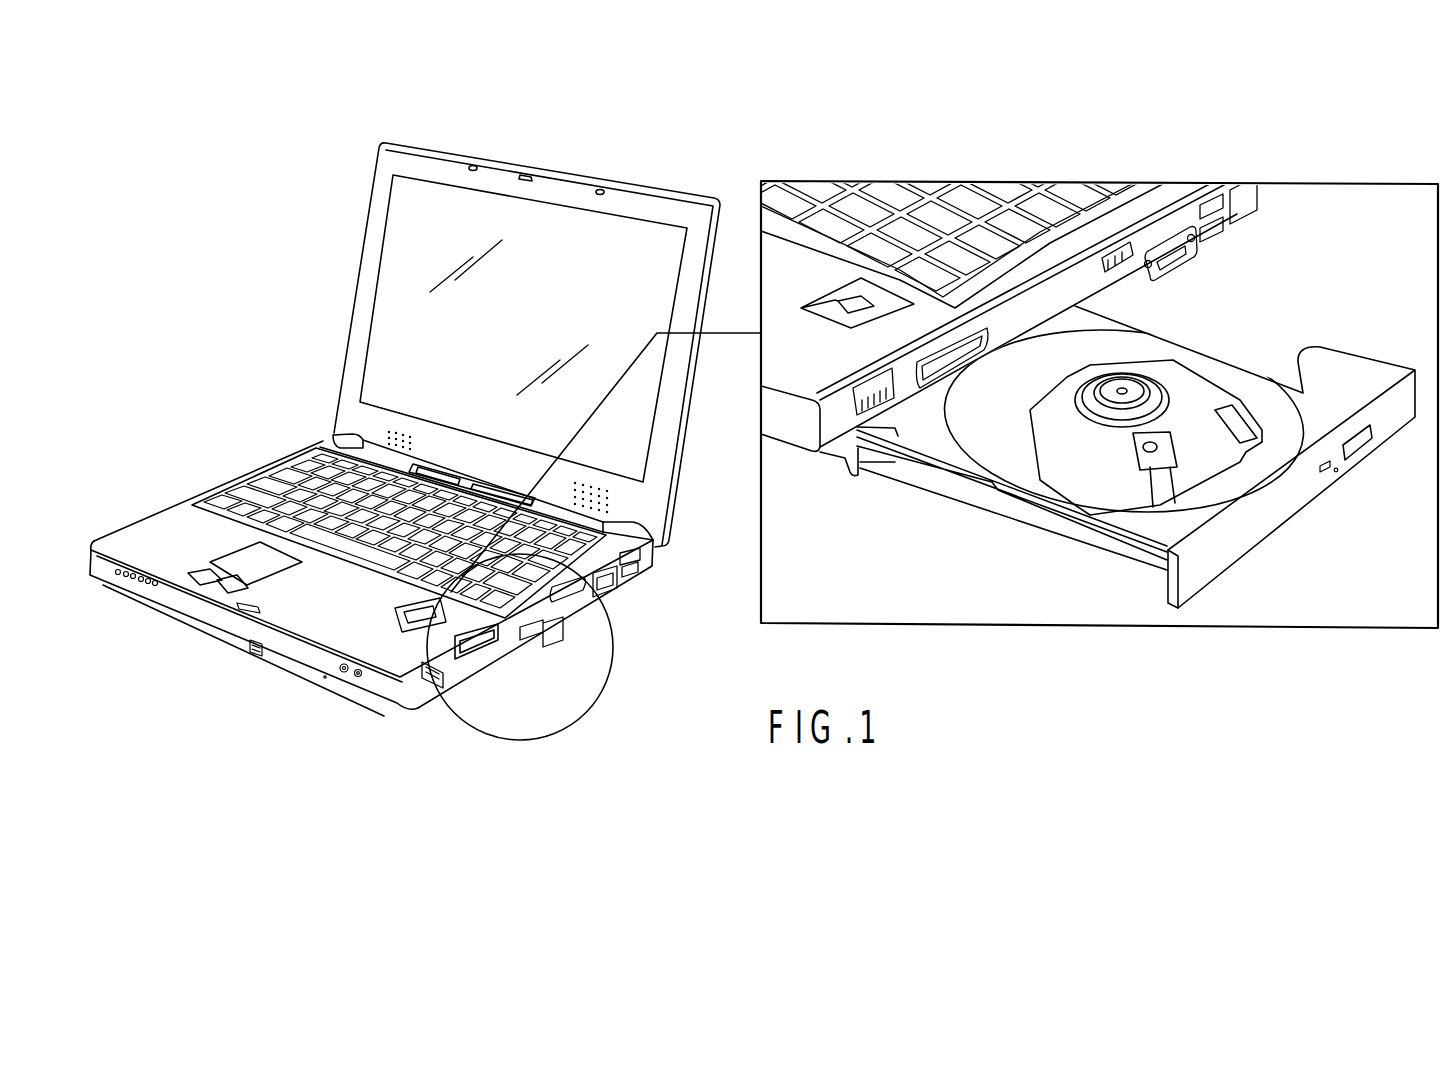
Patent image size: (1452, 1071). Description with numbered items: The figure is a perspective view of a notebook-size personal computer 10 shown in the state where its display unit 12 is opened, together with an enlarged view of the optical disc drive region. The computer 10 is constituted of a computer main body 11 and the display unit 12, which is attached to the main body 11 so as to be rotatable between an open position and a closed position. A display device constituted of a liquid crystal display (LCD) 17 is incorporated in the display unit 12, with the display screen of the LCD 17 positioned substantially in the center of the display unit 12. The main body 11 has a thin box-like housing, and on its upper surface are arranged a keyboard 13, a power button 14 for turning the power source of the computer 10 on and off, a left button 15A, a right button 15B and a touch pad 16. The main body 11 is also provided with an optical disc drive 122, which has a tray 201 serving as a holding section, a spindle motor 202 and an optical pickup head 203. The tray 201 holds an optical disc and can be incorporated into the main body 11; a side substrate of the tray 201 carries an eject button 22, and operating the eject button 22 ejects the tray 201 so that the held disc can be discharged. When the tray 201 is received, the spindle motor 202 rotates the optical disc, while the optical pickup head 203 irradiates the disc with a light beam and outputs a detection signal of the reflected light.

The notebook-size personal computer 10 is at (614, 157).
The computer main body 11 is at (383, 687).
The display unit 12 is at (667, 427).
The keyboard 13 is at (262, 478).
The power button 14 is at (435, 467).
The left button 15A is at (205, 577).
The right button 15B is at (228, 590).
The touch pad 16 is at (270, 571).
The liquid crystal display (LCD) 17 is at (635, 243).
The optical disc drive 122 is at (493, 658).
The tray 201 is at (1127, 343).
The spindle motor 202 is at (1072, 406).
The optical pickup head 203 is at (1133, 450).
The eject button 22 is at (1360, 445).